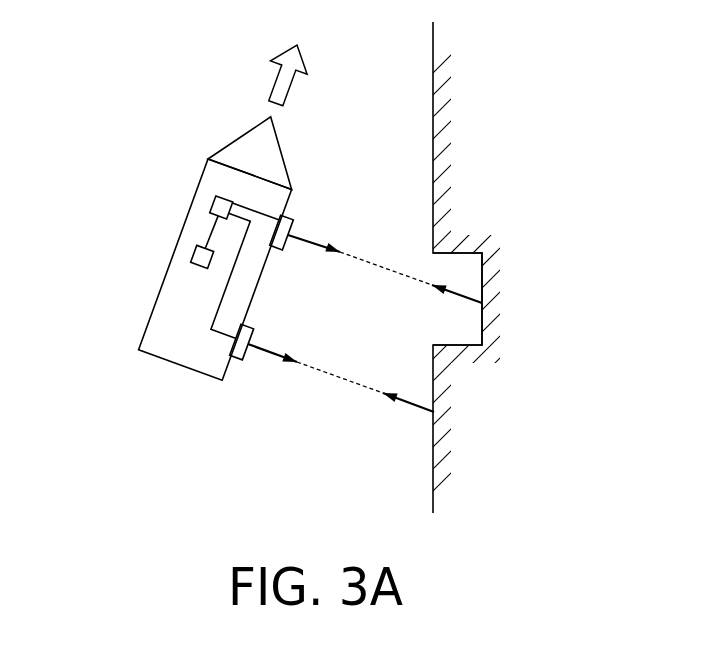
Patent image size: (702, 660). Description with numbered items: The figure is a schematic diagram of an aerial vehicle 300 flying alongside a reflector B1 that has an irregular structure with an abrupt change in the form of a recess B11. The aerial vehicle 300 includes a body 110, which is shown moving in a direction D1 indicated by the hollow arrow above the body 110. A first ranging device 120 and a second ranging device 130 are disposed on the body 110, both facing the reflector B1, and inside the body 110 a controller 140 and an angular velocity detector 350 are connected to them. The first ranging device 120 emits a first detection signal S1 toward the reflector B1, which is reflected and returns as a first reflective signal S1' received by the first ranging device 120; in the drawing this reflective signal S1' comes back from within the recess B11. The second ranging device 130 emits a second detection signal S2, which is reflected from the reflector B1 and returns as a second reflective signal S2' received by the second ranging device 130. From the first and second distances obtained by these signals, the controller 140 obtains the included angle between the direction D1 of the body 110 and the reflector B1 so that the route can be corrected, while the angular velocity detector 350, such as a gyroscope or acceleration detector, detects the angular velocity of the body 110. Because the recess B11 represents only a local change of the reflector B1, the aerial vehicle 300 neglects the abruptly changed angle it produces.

The aerial vehicle 300 is at (194, 102).
The body 110 is at (154, 305).
The first ranging device 120 is at (291, 212).
The second ranging device 130 is at (248, 324).
The controller 140 is at (212, 201).
The angular velocity detector 350 is at (196, 247).
The direction D1 is at (287, 62).
The first detection signal S1 is at (360, 248).
The second detection signal S2 is at (315, 357).
The first reflective signal S1' is at (438, 308).
The second reflective signal S2' is at (406, 433).
The reflector B1 is at (437, 144).
The recess B11 is at (484, 281).